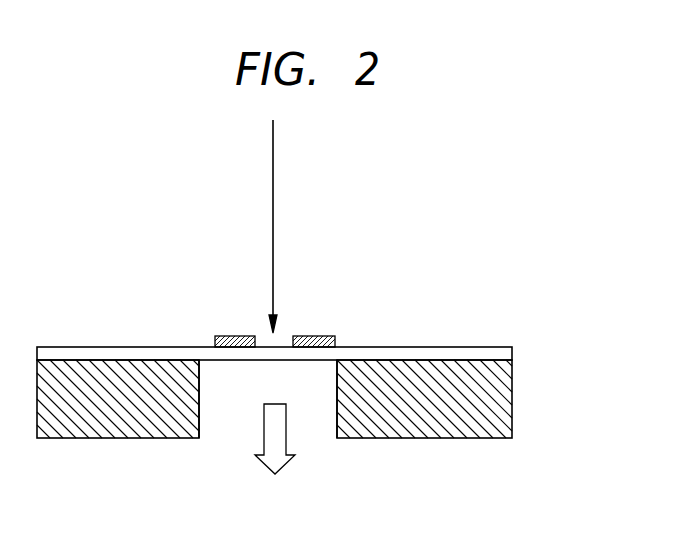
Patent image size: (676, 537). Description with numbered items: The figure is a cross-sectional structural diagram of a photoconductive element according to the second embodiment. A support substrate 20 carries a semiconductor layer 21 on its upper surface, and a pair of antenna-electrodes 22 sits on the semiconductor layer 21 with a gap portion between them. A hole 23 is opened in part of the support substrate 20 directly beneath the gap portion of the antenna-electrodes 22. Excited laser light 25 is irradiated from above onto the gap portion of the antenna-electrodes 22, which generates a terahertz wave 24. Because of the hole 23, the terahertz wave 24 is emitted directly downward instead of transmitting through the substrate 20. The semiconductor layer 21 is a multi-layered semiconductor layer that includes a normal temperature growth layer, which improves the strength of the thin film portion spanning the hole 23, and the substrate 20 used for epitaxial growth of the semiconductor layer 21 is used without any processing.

The support substrate 20 is at (502, 400).
The semiconductor layer 21 is at (382, 348).
The antenna-electrodes 22 is at (315, 337).
The hole 23 is at (315, 425).
The terahertz wave 24 is at (265, 467).
The excited laser light 25 is at (270, 182).